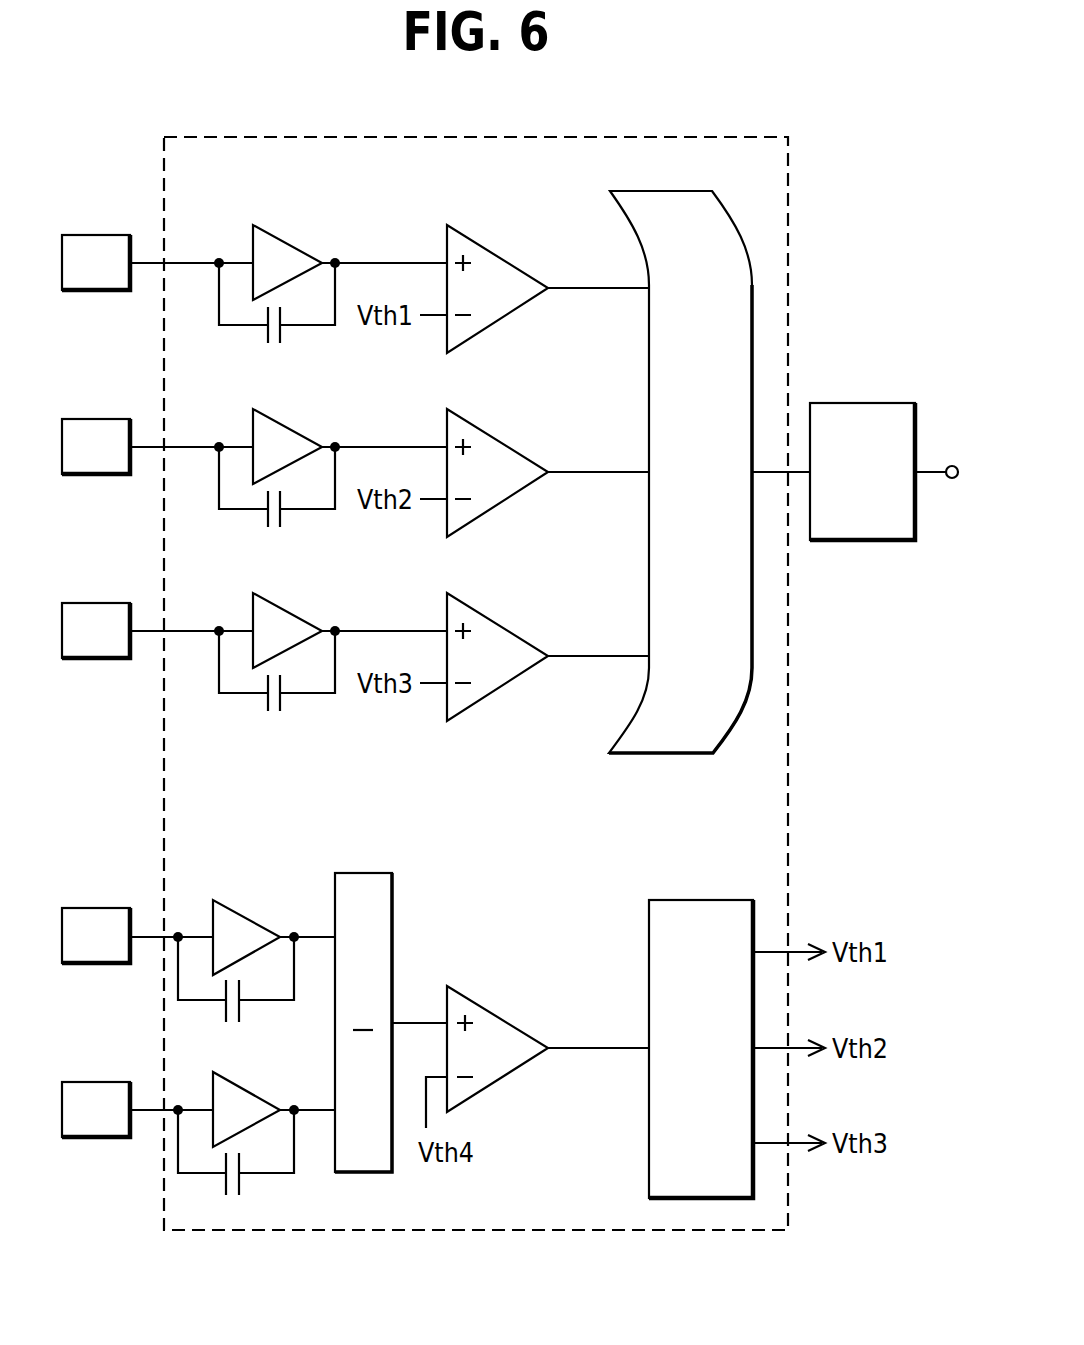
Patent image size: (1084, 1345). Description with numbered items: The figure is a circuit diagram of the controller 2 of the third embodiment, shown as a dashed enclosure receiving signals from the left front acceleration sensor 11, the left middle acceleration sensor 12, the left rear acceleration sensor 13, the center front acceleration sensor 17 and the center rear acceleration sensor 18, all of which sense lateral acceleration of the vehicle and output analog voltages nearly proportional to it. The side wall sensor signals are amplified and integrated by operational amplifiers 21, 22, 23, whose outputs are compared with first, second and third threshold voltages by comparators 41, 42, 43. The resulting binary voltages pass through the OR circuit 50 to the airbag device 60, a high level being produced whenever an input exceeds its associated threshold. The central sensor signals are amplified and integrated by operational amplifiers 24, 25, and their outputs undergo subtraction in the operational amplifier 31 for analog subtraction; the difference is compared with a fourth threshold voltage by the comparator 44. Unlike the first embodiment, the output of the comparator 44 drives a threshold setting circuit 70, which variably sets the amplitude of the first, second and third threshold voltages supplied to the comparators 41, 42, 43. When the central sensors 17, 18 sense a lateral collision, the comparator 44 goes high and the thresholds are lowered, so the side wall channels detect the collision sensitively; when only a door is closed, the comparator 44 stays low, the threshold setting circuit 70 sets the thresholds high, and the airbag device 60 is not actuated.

The controller 2 is at (653, 137).
The left front acceleration sensor 11 is at (103, 235).
The left middle acceleration sensor 12 is at (103, 419).
The left rear acceleration sensor 13 is at (103, 603).
The center front acceleration sensor 17 is at (103, 908).
The center rear acceleration sensor 18 is at (103, 1082).
The operational amplifier 21 is at (286, 248).
The operational amplifier 22 is at (286, 432).
The operational amplifier 23 is at (286, 616).
The operational amplifier 24 is at (246, 922).
The operational amplifier 25 is at (246, 1096).
The operational amplifier for analog subtraction 31 is at (392, 902).
The comparator 41 is at (495, 263).
The comparator 42 is at (495, 447).
The comparator 43 is at (495, 631).
The comparator 44 is at (495, 1027).
The OR circuit 50 is at (740, 302).
The airbag device 60 is at (858, 415).
The threshold setting circuit 70 is at (705, 1188).